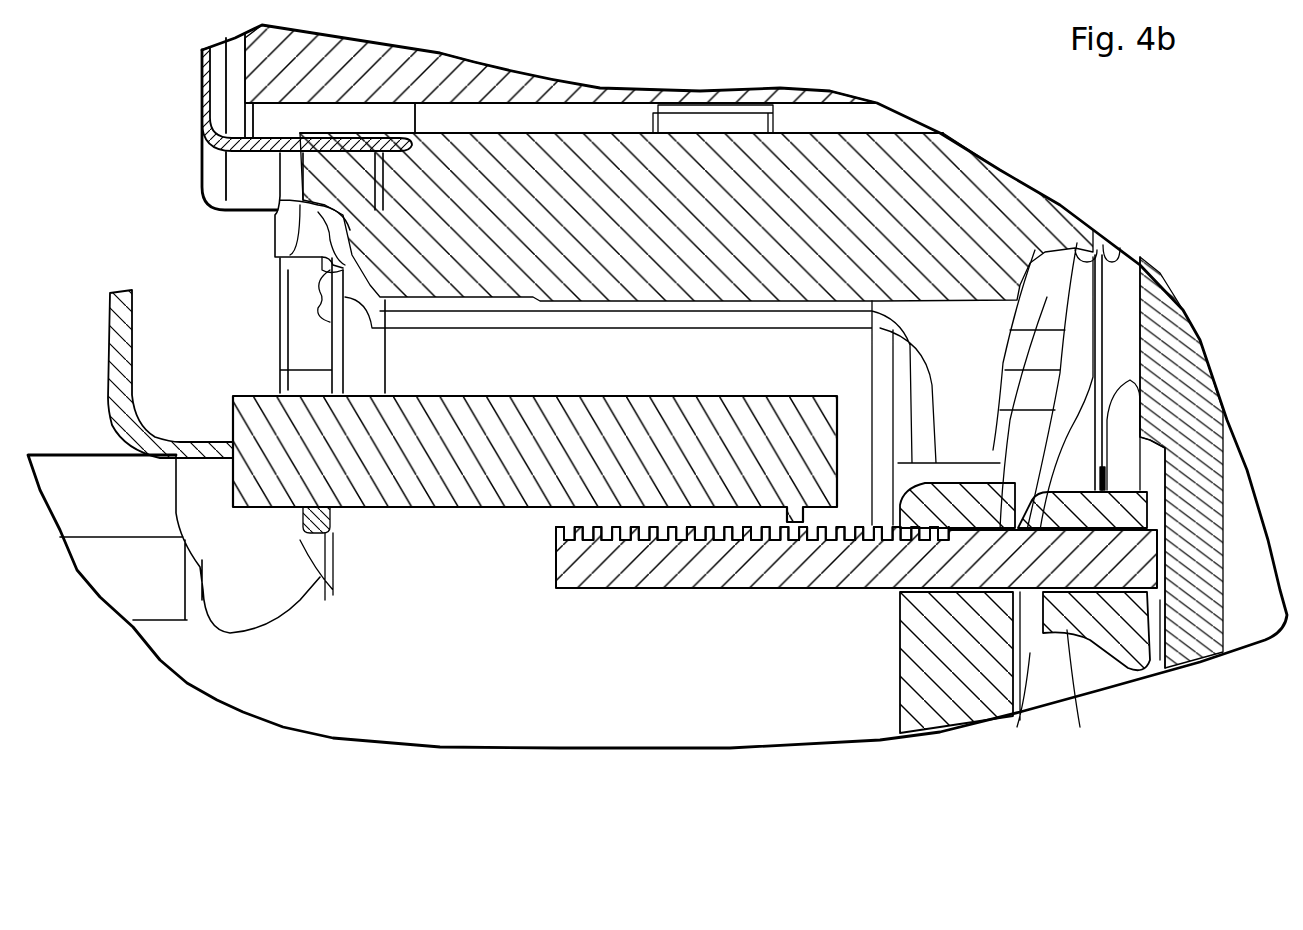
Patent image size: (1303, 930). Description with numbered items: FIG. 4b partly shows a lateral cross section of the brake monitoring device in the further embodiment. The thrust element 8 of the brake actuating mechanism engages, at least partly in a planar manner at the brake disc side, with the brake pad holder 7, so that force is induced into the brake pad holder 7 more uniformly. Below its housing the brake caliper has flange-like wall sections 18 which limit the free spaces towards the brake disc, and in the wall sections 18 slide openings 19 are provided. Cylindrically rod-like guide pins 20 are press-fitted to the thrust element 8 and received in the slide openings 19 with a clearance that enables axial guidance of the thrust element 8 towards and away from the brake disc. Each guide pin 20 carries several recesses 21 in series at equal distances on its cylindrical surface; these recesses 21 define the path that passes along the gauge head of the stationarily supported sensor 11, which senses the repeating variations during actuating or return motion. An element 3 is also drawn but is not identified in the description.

The toothing 3 is at (570, 545).
The brake pad holder 7 is at (1195, 310).
The thrust element 8 is at (1120, 628).
The sensor 11 is at (333, 600).
The wall sections 18 is at (943, 710).
The slide openings 19 is at (938, 542).
The guide pins 20 is at (597, 565).
The recesses 21 is at (575, 547).